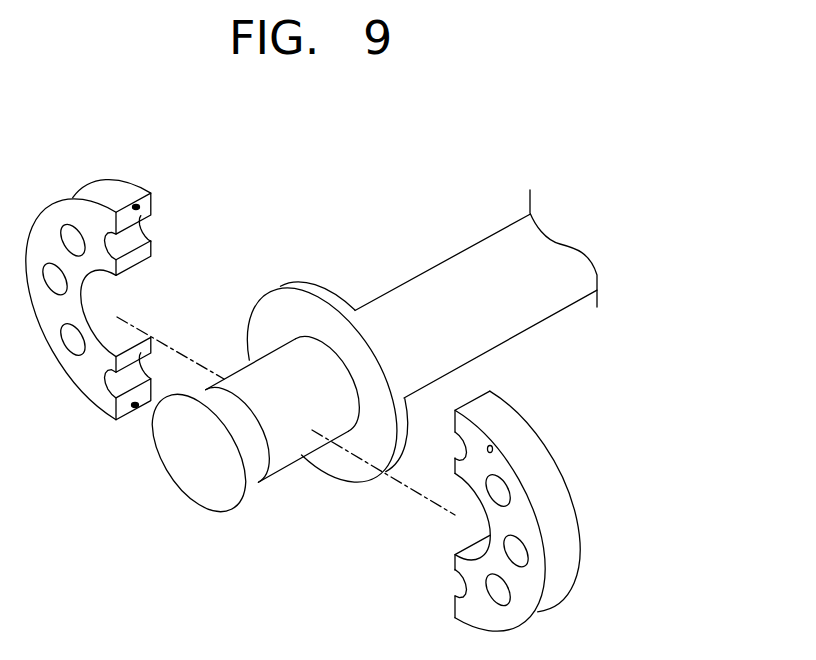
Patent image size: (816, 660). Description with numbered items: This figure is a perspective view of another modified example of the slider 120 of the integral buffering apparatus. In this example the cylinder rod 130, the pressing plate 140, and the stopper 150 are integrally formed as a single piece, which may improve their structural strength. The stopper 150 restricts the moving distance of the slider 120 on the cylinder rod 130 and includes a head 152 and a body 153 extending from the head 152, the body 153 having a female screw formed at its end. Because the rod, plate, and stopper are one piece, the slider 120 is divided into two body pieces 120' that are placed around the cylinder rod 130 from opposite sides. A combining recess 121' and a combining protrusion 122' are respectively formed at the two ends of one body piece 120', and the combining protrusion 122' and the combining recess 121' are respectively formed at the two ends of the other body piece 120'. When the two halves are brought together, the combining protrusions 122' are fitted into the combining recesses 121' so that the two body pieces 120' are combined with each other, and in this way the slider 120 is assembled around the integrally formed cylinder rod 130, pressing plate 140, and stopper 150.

The slider 120 is at (339, 368).
The body piece 120' is at (126, 303).
The combining recess 121' is at (132, 452).
The combining protrusion 122' is at (180, 195).
The cylinder rod 130 is at (460, 263).
The pressing plate 140 is at (316, 290).
The stopper 150 is at (205, 505).
The head 152 is at (252, 490).
The body 153 is at (280, 457).